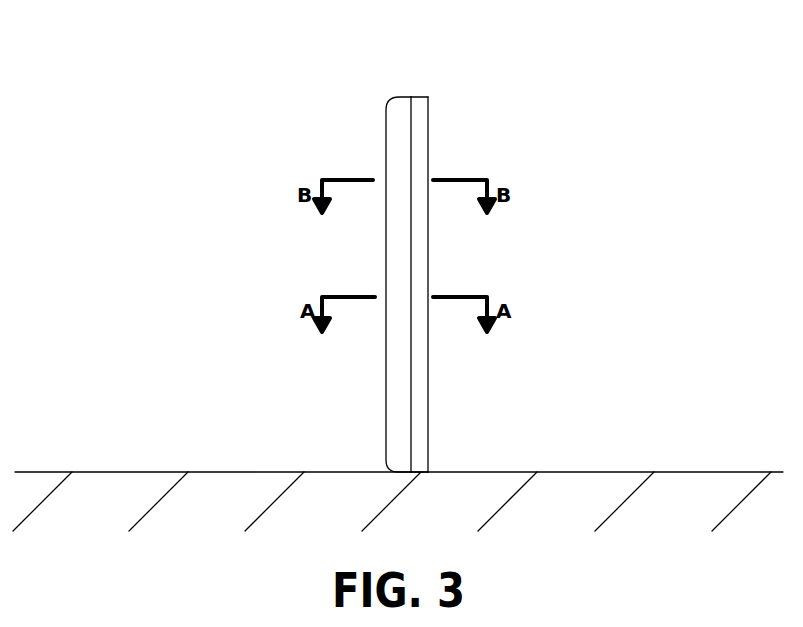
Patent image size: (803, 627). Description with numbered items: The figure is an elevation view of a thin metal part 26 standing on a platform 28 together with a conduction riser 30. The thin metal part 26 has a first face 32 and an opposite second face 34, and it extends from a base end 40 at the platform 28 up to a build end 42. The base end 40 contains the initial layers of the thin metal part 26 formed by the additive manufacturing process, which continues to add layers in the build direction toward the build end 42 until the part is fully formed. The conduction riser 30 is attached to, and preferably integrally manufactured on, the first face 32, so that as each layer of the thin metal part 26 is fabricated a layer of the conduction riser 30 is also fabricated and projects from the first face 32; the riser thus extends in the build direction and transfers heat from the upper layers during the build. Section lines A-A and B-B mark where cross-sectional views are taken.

The thin metal part 26 is at (418, 246).
The platform 28 is at (251, 494).
The conduction riser 30 is at (400, 132).
The first face 32 is at (411, 241).
The second face 34 is at (428, 252).
The base end 40 is at (418, 471).
The build end 42 is at (419, 97).